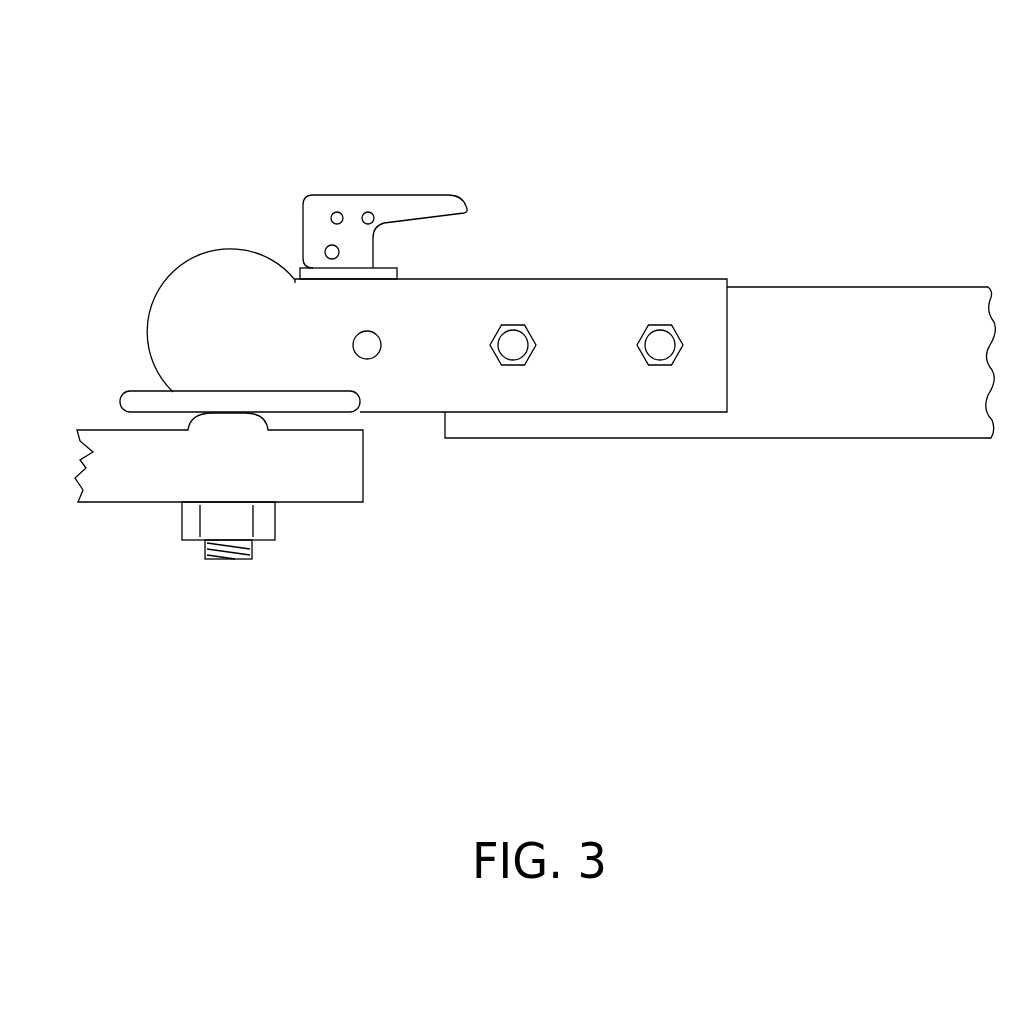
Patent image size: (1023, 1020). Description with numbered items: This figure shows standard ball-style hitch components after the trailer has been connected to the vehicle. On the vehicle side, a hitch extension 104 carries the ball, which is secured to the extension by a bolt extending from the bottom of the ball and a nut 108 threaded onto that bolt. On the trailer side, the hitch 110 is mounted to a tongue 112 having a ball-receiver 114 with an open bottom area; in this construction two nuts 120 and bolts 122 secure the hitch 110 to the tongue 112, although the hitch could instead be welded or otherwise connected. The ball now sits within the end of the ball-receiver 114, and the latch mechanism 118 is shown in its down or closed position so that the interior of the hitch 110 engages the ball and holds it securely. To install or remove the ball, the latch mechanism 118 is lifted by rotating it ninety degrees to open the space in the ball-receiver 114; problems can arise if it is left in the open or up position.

The hitch extension 104 is at (300, 472).
The nut 108 is at (222, 517).
The hitch 110 is at (679, 188).
The tongue 112 is at (788, 408).
The ball-receiver 114 is at (212, 327).
The latch mechanism 118 is at (352, 215).
The nuts 120 is at (513, 350).
The bolts 122 is at (659, 350).